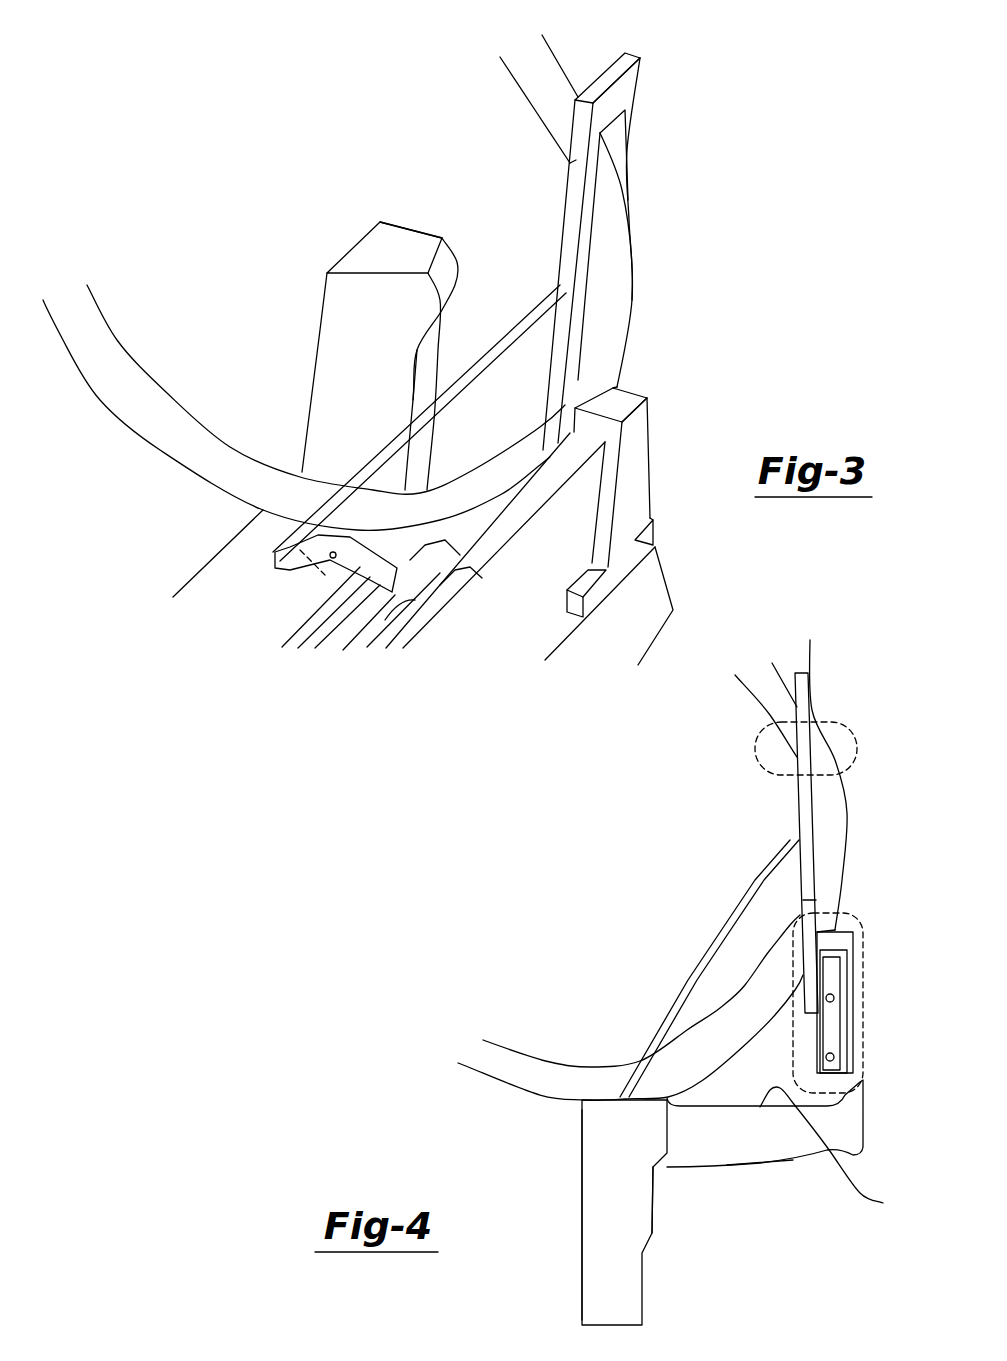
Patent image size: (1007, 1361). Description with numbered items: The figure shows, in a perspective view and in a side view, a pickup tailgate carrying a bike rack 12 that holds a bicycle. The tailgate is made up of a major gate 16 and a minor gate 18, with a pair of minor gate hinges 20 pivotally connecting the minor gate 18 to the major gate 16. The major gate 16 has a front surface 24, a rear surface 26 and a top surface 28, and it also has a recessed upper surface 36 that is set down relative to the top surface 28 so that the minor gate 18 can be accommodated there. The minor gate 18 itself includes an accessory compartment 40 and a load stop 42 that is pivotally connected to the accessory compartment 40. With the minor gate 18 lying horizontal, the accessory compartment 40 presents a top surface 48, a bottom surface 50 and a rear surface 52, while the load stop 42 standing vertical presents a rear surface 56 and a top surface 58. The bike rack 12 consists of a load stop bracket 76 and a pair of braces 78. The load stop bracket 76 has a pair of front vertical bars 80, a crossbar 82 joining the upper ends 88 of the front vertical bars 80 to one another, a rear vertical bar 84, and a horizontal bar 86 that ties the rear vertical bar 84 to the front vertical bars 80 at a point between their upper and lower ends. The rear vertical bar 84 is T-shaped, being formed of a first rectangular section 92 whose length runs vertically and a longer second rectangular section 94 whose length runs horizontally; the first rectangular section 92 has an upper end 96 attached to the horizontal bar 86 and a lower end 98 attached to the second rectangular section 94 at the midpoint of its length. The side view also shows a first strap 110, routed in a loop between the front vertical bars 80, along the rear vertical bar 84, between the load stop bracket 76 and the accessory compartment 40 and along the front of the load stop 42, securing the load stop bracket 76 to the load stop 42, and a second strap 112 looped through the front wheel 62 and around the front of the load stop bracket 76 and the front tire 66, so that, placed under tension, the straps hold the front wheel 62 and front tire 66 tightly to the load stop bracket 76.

In FIG. 3, the bike rack 12 is at (708, 118).
In FIG. 4, the bike rack 12 is at (778, 840).
In FIG. 3, the major gate 16 is at (403, 220).
In FIG. 4, the major gate 16 is at (580, 1170).
In FIG. 3, the minor gate 18 is at (690, 350).
In FIG. 4, the minor gate 18 is at (890, 1045).
In FIG. 3, the minor gate hinges 20 is at (295, 585).
In FIG. 4, the front surface 24 is at (580, 1220).
In FIG. 3, the rear surface 26 is at (430, 455).
In FIG. 4, the rear surface 26 is at (653, 1230).
In FIG. 3, the top surface 28 is at (375, 253).
In FIG. 3, the recessed upper surface 36 is at (203, 580).
In FIG. 3, the accessory compartment 40 is at (674, 577).
In FIG. 4, the accessory compartment 40 is at (725, 1168).
In FIG. 3, the load stop 42 is at (515, 600).
In FIG. 4, the load stop 42 is at (815, 1043).
In FIG. 4, the top surface 48 is at (834, 1152).
In FIG. 4, the bottom surface 50 is at (793, 1160).
In FIG. 3, the rear surface 52 is at (655, 605).
In FIG. 4, the rear surface 52 is at (863, 1110).
In FIG. 3, the rear surface 56 is at (493, 622).
In FIG. 3, the top surface 58 is at (355, 622).
In FIG. 3, the front wheel 62 is at (167, 393).
In FIG. 4, the front wheel 62 is at (550, 1060).
In FIG. 3, the front tire 66 is at (160, 450).
In FIG. 4, the front tire 66 is at (848, 810).
In FIG. 3, the load stop bracket 76 is at (640, 58).
In FIG. 3, the braces 78 is at (490, 390).
In FIG. 4, the braces 78 is at (675, 1005).
In FIG. 3, the front vertical bars 80 is at (628, 157).
In FIG. 4, the front vertical bars 80 is at (800, 897).
In FIG. 3, the crossbar 82 is at (613, 80).
In FIG. 4, the crossbar 82 is at (810, 665).
In FIG. 3, the rear vertical bar 84 is at (652, 497).
In FIG. 4, the rear vertical bar 84 is at (855, 1010).
In FIG. 3, the horizontal bar 86 is at (620, 398).
In FIG. 4, the horizontal bar 86 is at (840, 930).
In FIG. 3, the upper end 88 is at (570, 163).
In FIG. 3, the first rectangular section 92 is at (600, 525).
In FIG. 3, the second rectangular section 94 is at (590, 603).
In FIG. 3, the upper end 96 is at (630, 442).
In FIG. 3, the lower end 98 is at (620, 548).
In FIG. 4, the first strap 110 is at (870, 935).
In FIG. 4, the second strap 112 is at (860, 748).